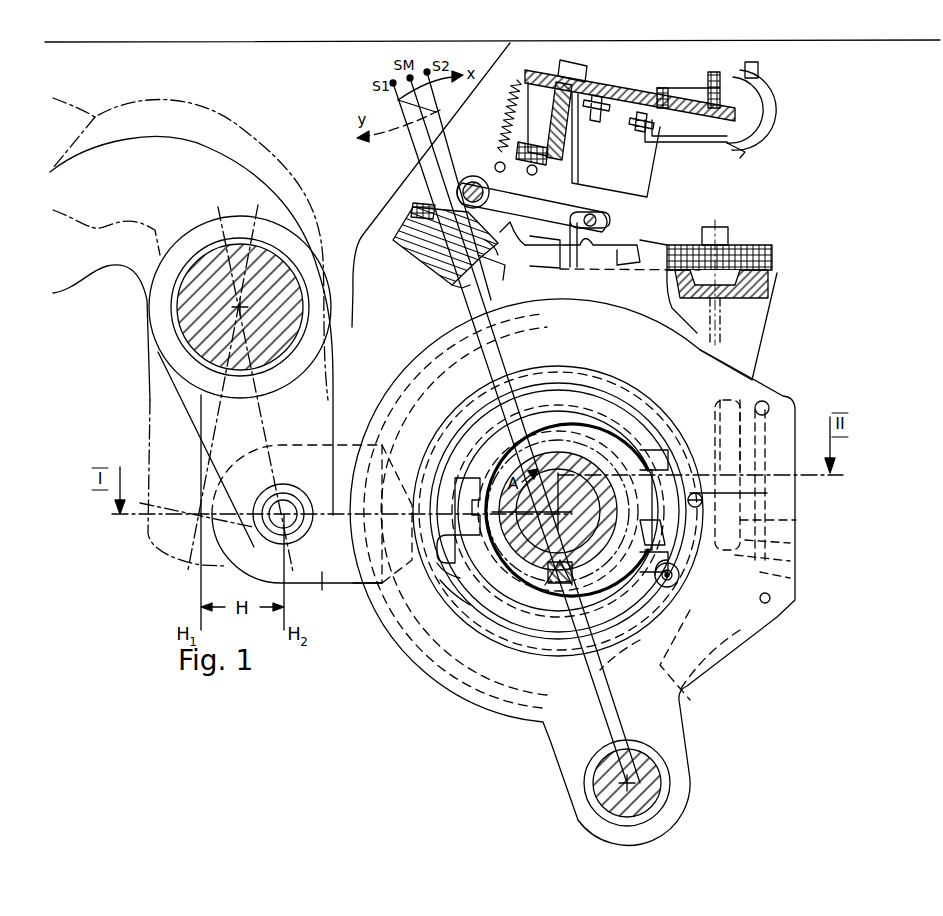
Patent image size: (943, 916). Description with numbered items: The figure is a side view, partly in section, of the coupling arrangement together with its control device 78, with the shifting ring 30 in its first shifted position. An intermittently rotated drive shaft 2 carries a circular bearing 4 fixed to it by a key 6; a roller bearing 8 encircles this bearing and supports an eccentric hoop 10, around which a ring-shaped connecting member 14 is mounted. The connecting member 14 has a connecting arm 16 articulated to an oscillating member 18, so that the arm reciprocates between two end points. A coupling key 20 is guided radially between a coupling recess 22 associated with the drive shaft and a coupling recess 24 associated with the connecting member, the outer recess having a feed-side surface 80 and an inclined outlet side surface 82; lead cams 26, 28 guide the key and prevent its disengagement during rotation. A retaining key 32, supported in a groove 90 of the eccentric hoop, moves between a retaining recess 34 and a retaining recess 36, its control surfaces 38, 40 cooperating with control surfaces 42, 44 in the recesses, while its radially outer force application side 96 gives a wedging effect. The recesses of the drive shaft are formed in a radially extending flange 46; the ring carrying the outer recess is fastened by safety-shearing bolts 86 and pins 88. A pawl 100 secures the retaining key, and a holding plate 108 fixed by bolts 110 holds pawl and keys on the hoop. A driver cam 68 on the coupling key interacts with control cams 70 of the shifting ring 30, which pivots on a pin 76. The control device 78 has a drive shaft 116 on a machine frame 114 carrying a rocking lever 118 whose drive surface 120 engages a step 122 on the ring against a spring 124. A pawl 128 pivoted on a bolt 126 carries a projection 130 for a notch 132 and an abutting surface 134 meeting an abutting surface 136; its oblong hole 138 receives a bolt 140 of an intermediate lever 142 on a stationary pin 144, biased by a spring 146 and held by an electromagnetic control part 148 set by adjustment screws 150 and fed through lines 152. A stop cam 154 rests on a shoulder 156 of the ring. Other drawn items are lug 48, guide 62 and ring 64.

The drive shaft 2 is at (524, 438).
The circular bearing 4 is at (553, 436).
The key 6 is at (556, 600).
The roller bearing 8 is at (448, 588).
The eccentric hoop 10 is at (513, 608).
The connecting member 14 is at (373, 612).
The connecting arm 16 is at (297, 532).
The oscillating member 18 is at (190, 406).
The coupling key 20 is at (646, 462).
The coupling recess 22 is at (628, 448).
The coupling recess 24 is at (435, 553).
The lead cam 26 is at (725, 372).
The lead cam 28 is at (578, 418).
The shifting ring 30 is at (387, 392).
The retaining key 32 is at (672, 530).
The retaining recess 34 is at (656, 528).
The retaining recess 36 is at (790, 561).
The control surface 38 is at (656, 578).
The control surface 40 is at (796, 516).
The control surface 42 is at (600, 595).
The control surface 44 is at (790, 543).
The radially extending flange 46 is at (575, 592).
The lug 48 is at (656, 440).
The guide 62 is at (750, 452).
The ring 64 is at (620, 435).
The driver cam 68 is at (767, 493).
The control cams 70 is at (417, 497).
The pin 76 is at (648, 772).
The control device 78 is at (748, 194).
The feed-side surface 80 is at (452, 522).
The outlet side surface 82 is at (440, 570).
The bolts 86 is at (765, 401).
The pins 88 is at (768, 604).
The groove 90 is at (652, 496).
The radially outer force application side 96 is at (790, 578).
The pawl 100 is at (632, 650).
The holding plate 108 is at (723, 667).
The bolts 110 is at (678, 655).
The machine frame 114 is at (360, 268).
The drive shaft 116 is at (405, 255).
The rocking lever 118 is at (428, 285).
The drive surface 120 is at (455, 300).
The step 122 is at (498, 284).
The spring 124 is at (688, 240).
The bolt 126 is at (472, 180).
The pawl 128 is at (536, 207).
The projection 130 is at (645, 245).
The notch 132 is at (666, 287).
The abutting surface 134 is at (578, 268).
The abutting surface 136 is at (548, 270).
The oblong hole 138 is at (598, 208).
The bolt 140 is at (575, 178).
The intermediate lever 142 is at (567, 158).
The stationary pin 144 is at (575, 125).
The spring 146 is at (510, 112).
The electromagnetic control part 148 is at (637, 157).
The adjustment screws 150 is at (650, 95).
The lines 152 is at (745, 152).
The stop cam 154 is at (496, 262).
The shoulder 156 is at (528, 250).